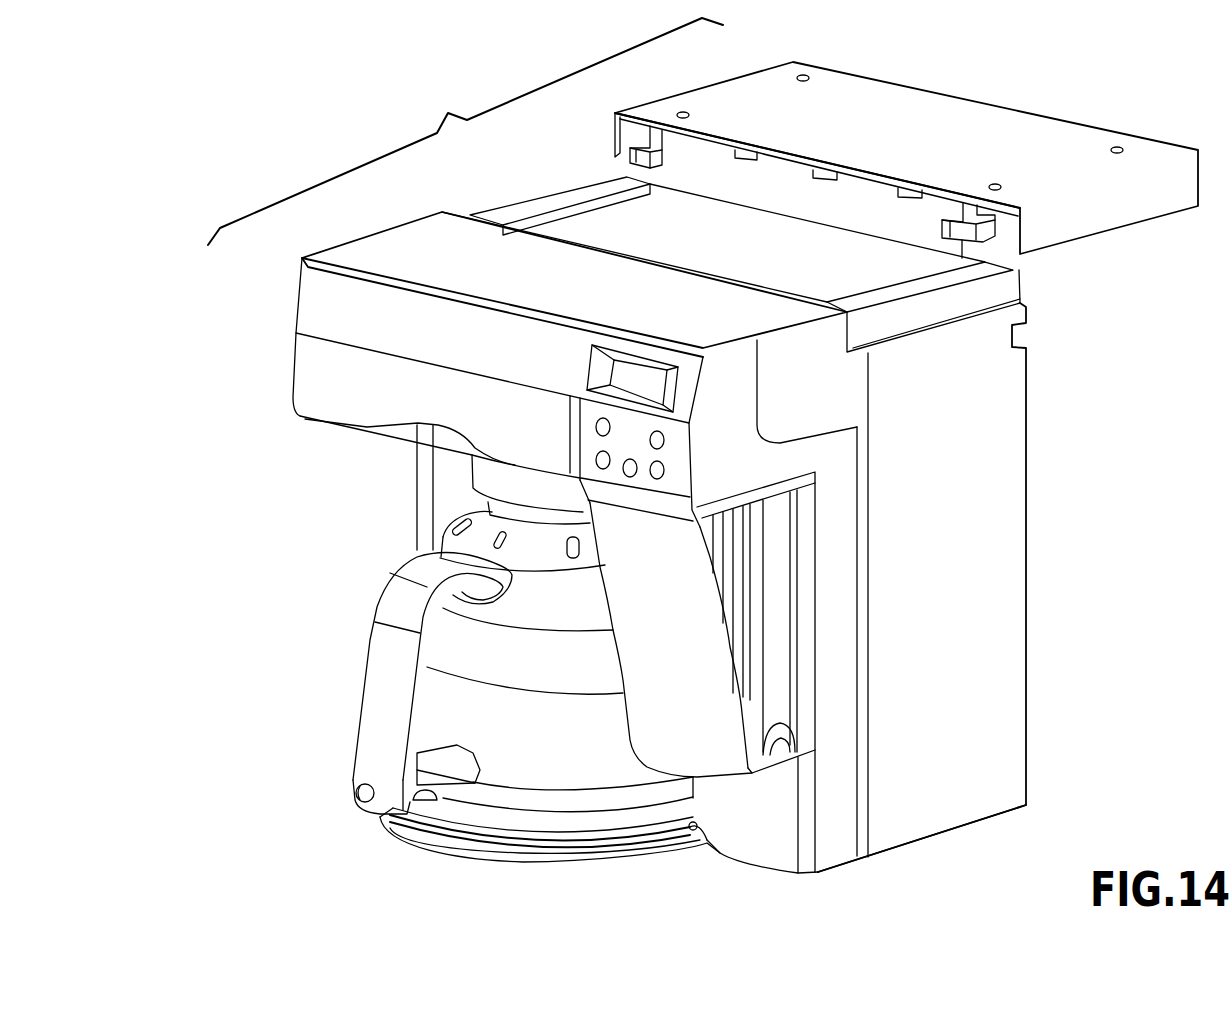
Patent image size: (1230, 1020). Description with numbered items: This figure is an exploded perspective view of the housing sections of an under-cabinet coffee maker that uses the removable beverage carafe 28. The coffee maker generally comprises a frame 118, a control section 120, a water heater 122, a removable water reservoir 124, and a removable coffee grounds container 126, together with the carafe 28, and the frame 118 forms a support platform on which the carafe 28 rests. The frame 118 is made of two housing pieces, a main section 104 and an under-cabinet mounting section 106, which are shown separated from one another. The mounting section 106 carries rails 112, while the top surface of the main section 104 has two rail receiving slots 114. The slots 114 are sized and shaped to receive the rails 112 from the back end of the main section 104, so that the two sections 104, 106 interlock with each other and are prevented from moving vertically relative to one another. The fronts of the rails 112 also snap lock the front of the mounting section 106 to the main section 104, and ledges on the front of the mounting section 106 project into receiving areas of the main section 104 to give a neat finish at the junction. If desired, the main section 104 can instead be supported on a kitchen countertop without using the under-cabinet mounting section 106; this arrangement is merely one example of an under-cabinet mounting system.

The carafe 28 is at (363, 680).
The main section 104 is at (997, 522).
The under-cabinet mounting section 106 is at (1140, 212).
The rails 112 is at (697, 155).
The rail receiving slots 114 is at (558, 210).
The frame 118 is at (1000, 750).
The control section 120 is at (587, 445).
The water heater 122 is at (973, 630).
The removable water reservoir 124 is at (658, 723).
The removable coffee grounds container 126 is at (313, 380).